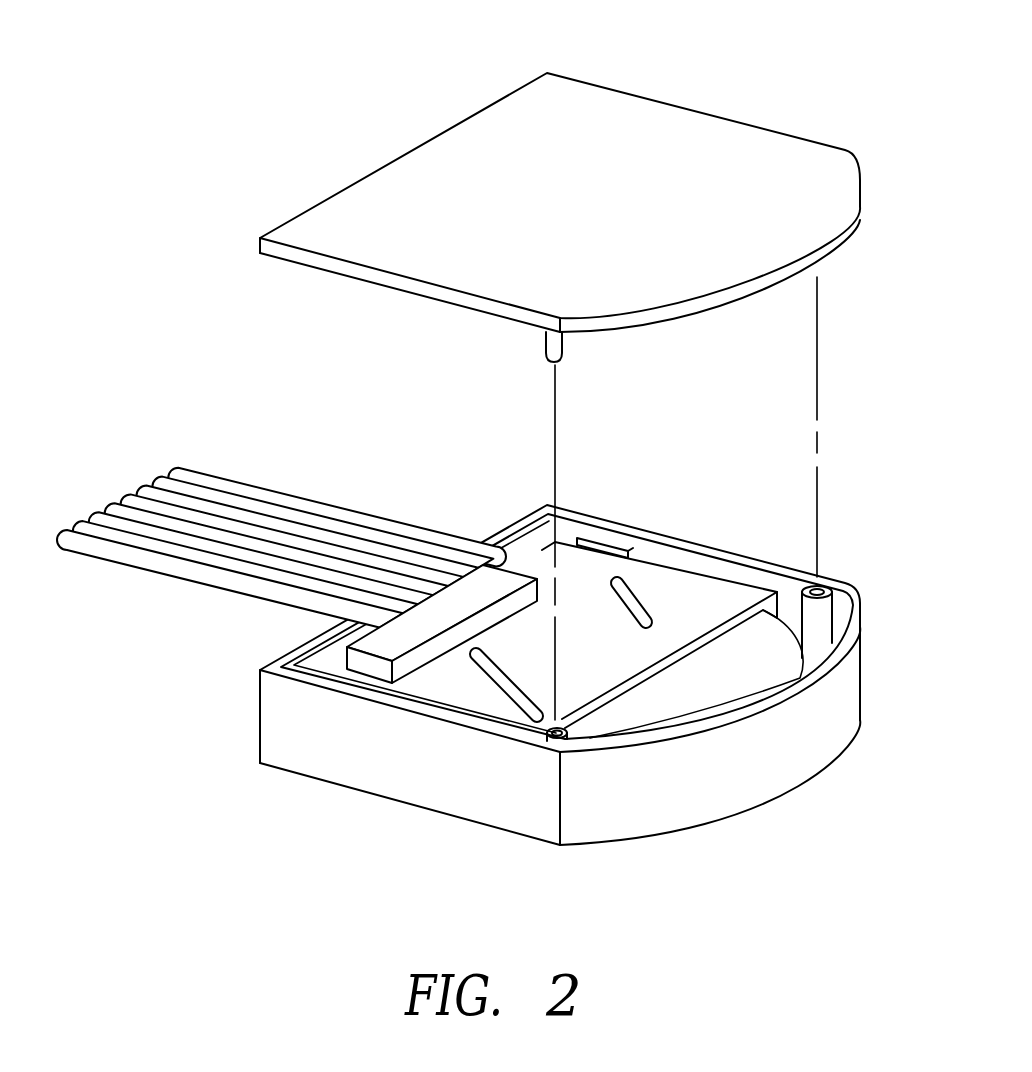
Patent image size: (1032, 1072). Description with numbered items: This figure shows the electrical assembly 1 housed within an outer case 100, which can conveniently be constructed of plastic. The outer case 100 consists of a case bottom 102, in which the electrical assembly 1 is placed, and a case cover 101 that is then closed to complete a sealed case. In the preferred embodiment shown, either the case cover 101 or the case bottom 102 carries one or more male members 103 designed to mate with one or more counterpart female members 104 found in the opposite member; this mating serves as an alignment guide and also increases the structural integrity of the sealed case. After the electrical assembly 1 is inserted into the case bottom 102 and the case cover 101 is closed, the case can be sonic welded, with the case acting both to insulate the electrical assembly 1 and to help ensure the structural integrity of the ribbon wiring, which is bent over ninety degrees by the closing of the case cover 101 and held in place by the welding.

The outer case 100 is at (469, 682).
The case cover 101 is at (560, 197).
The case bottom 102 is at (338, 762).
The male member 103 is at (546, 346).
The female member 104 is at (820, 586).
The electrical assembly 1 is at (716, 572).